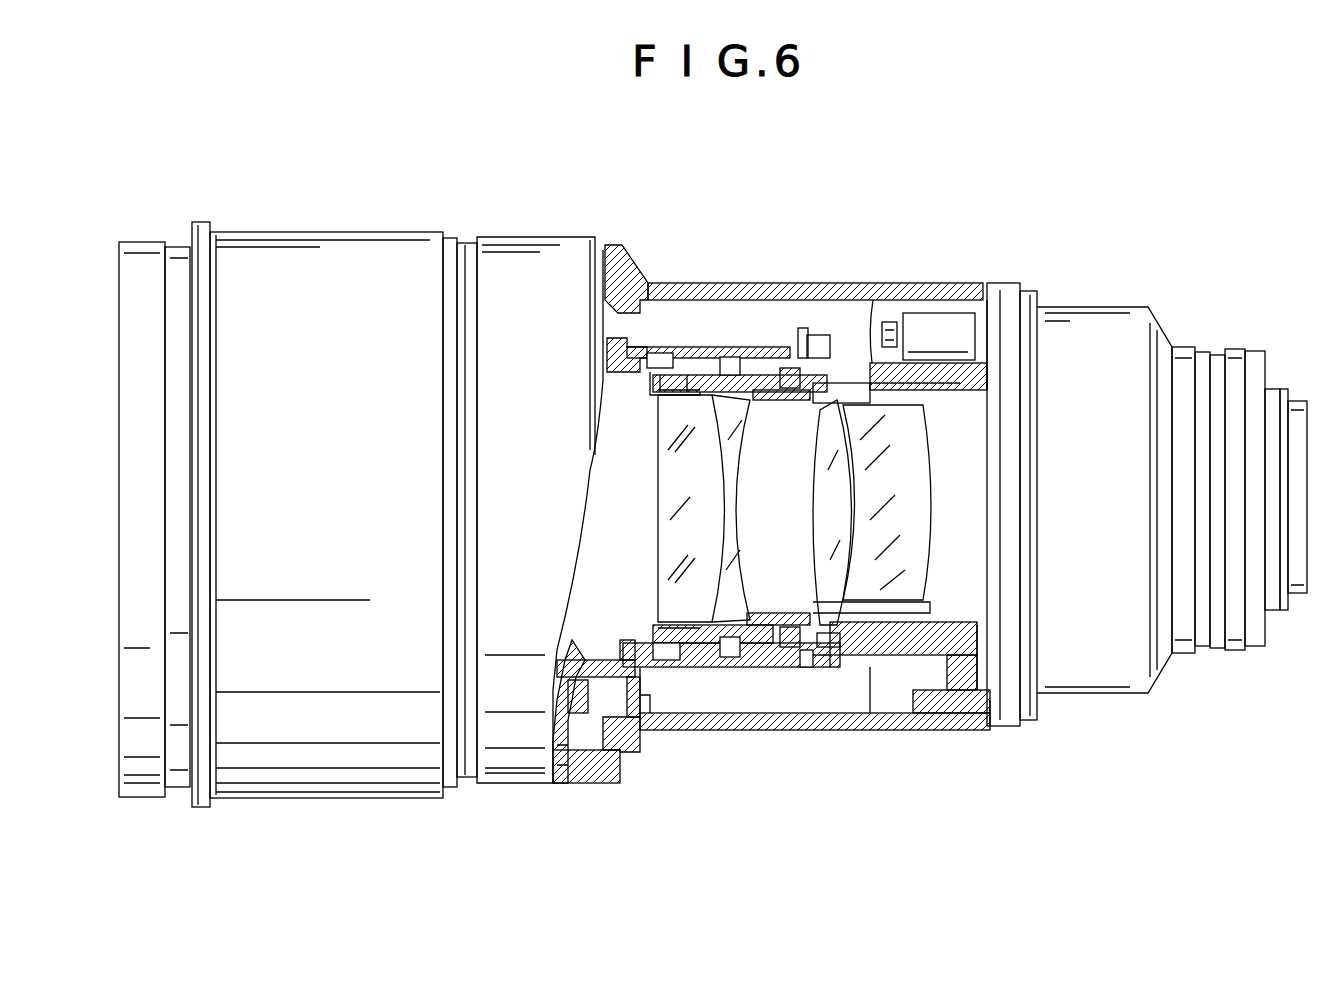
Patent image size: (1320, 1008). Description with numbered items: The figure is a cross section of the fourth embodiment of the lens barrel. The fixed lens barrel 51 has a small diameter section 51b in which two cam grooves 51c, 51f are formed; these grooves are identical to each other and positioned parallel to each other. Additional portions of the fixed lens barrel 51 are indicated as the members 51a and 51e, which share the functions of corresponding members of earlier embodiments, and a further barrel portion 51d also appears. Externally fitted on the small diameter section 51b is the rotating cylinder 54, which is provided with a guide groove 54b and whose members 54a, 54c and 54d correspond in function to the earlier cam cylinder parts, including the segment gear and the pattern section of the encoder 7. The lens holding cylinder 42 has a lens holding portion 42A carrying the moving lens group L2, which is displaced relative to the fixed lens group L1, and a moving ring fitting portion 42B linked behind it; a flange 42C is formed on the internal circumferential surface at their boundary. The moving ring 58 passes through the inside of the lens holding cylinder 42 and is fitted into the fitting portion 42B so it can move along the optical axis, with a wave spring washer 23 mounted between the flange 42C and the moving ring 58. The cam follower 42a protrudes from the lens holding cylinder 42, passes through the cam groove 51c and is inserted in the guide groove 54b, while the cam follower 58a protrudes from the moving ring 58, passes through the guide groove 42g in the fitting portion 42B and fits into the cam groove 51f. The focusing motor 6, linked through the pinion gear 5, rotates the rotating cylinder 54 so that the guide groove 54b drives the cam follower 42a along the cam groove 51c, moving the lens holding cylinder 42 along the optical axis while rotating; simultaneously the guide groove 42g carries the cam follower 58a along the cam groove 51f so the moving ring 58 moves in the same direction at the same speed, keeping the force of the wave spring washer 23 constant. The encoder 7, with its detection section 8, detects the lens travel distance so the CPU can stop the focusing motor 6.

The fixed lens barrel 51 is at (558, 270).
The fixed lens barrel member 51a is at (1288, 395).
The small diameter section 51b is at (985, 725).
The cam groove 51c is at (735, 668).
The cylindrical portion of barrel 51d is at (947, 660).
The fixed lens barrel member 51e is at (653, 733).
The cam groove 51f is at (810, 668).
The rotating cylinder 54 is at (676, 345).
The rotating cylinder member 54a is at (655, 340).
The guide groove 54b is at (745, 345).
The rotating cylinder member 54c is at (835, 668).
The rotating cylinder member 54d is at (598, 748).
The lens holding cylinder 42 is at (686, 668).
The lens holding portion 42A is at (716, 345).
The moving ring fitting portion 42B is at (840, 627).
The flange 42C is at (738, 398).
The cam follower 42a is at (765, 668).
The guide groove 42g is at (812, 335).
The wave spring washer 23 is at (780, 345).
The pinion gear 5 is at (888, 322).
The focusing motor 6 is at (952, 330).
The moving ring 58 is at (855, 345).
The cam follower 58a is at (853, 657).
The detection section 8 is at (557, 750).
The encoder 7 is at (632, 838).
The fixed lens group L1 is at (820, 497).
The moving lens group L2 is at (775, 543).